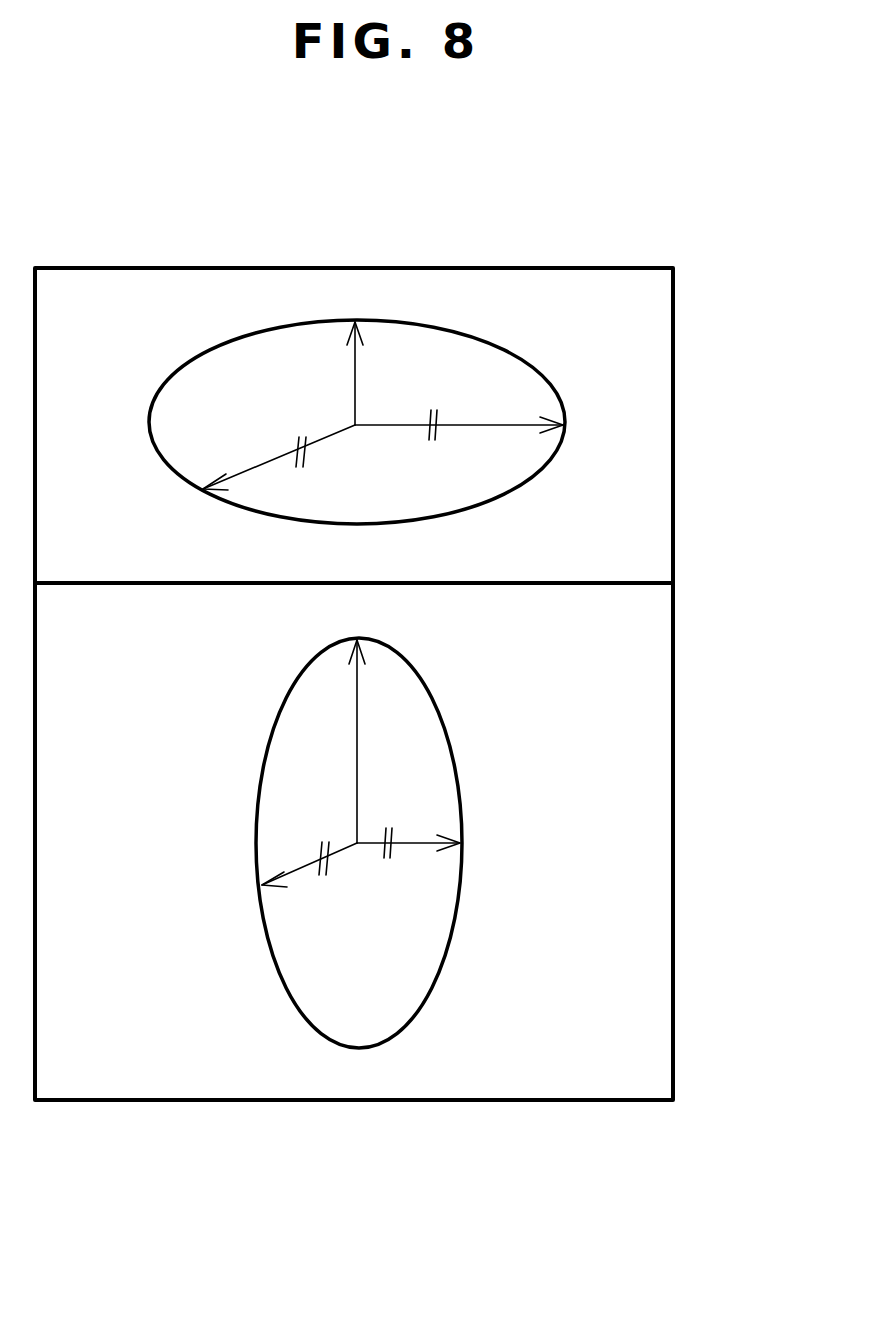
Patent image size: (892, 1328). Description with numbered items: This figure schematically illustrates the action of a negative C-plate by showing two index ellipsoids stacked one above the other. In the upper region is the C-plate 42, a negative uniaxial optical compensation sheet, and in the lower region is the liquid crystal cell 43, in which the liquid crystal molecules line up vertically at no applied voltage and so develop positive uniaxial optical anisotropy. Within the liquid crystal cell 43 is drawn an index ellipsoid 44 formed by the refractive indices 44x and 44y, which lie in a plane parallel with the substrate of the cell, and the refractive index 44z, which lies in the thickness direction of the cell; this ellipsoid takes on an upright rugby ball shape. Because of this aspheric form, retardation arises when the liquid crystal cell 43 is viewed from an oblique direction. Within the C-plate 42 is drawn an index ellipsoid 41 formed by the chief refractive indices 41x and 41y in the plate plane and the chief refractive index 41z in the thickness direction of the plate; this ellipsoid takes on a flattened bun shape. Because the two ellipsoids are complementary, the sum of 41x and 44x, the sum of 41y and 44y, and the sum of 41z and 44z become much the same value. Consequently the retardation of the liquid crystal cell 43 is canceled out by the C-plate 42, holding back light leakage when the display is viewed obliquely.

The index ellipsoid 41 is at (415, 325).
The chief refractive index 41x is at (498, 425).
The chief refractive index 41y is at (265, 462).
The chief refractive index 41z is at (353, 390).
The C-plate 42 is at (673, 428).
The liquid crystal cell 43 is at (660, 855).
The index ellipsoid 44 is at (357, 1048).
The refractive index 44x is at (410, 843).
The refractive index 44y is at (307, 868).
The refractive index 44z is at (355, 745).